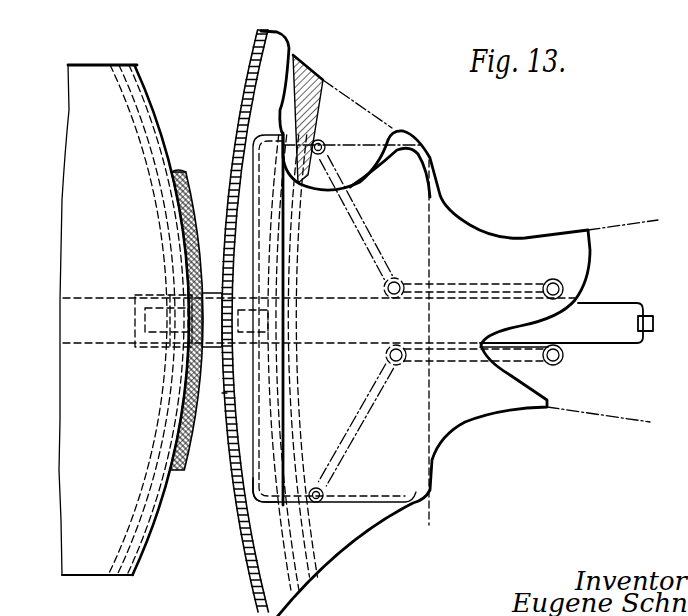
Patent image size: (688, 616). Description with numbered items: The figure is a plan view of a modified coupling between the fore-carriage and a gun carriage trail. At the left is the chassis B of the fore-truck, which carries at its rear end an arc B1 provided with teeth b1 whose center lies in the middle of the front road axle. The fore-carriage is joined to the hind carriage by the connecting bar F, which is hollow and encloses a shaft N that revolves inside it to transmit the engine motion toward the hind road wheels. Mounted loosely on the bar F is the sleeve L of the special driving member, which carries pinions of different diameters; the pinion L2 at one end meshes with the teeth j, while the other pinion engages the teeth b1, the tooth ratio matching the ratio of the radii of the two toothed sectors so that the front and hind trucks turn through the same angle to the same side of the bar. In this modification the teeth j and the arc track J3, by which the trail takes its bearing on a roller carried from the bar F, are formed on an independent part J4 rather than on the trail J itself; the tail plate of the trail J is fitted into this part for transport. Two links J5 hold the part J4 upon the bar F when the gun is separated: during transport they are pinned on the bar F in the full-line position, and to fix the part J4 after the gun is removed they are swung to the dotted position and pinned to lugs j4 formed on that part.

The chassis B is at (93, 80).
The arc B1 is at (188, 223).
The teeth b1 is at (189, 185).
The sleeve L is at (212, 303).
The pinion L2 is at (224, 392).
The toothed sector j is at (247, 86).
The trail J is at (498, 247).
The arc track J3 is at (306, 75).
The independent part J4 is at (277, 43).
The lugs j4 is at (327, 140).
The links J5 is at (473, 284).
The connecting bar F is at (607, 307).
The shaft N is at (645, 330).